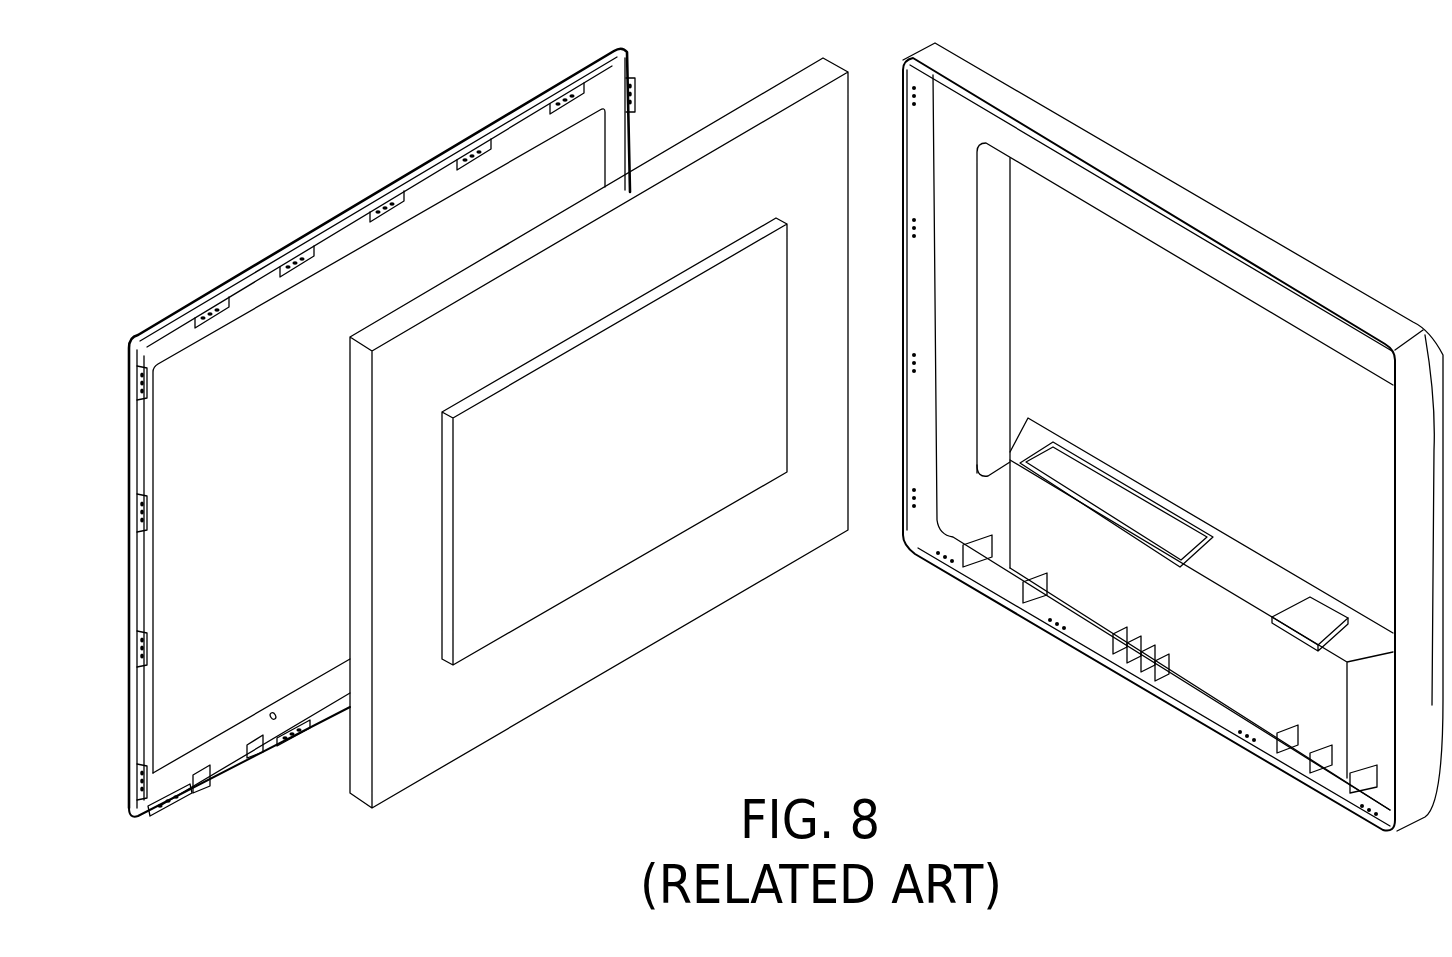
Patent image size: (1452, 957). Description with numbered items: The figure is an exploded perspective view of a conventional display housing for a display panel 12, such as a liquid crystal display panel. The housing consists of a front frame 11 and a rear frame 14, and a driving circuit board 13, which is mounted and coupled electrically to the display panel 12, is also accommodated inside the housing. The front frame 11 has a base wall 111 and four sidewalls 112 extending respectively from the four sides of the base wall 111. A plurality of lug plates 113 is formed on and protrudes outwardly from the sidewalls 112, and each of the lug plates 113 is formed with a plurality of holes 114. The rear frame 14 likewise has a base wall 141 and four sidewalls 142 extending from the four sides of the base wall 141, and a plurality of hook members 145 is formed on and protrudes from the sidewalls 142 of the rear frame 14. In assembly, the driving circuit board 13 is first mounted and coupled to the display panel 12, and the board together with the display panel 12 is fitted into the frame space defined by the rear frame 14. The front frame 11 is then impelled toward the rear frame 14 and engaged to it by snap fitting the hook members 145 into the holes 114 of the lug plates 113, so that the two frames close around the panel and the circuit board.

The front frame 11 is at (457, 106).
The base wall 111 is at (178, 330).
The sidewalls 112 is at (434, 168).
The lug plates 113 is at (281, 251).
The holes 114 is at (372, 190).
The display panel 12 is at (719, 90).
The driving circuit board 13 is at (580, 570).
The rear frame 14 is at (1242, 148).
The base wall 141 is at (975, 117).
The sidewalls 142 is at (1255, 233).
The hook members 145 is at (945, 576).